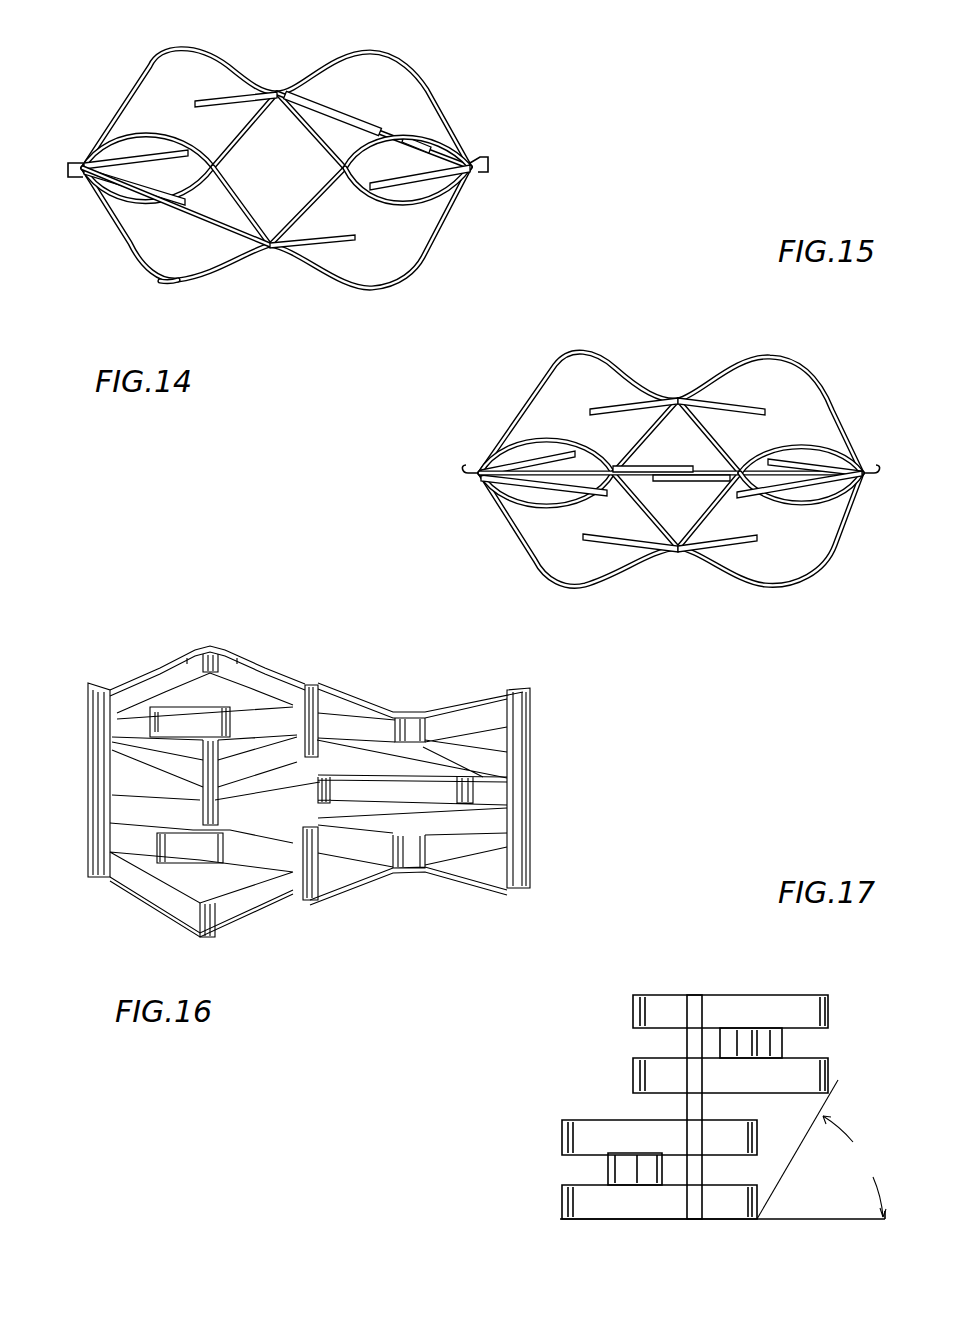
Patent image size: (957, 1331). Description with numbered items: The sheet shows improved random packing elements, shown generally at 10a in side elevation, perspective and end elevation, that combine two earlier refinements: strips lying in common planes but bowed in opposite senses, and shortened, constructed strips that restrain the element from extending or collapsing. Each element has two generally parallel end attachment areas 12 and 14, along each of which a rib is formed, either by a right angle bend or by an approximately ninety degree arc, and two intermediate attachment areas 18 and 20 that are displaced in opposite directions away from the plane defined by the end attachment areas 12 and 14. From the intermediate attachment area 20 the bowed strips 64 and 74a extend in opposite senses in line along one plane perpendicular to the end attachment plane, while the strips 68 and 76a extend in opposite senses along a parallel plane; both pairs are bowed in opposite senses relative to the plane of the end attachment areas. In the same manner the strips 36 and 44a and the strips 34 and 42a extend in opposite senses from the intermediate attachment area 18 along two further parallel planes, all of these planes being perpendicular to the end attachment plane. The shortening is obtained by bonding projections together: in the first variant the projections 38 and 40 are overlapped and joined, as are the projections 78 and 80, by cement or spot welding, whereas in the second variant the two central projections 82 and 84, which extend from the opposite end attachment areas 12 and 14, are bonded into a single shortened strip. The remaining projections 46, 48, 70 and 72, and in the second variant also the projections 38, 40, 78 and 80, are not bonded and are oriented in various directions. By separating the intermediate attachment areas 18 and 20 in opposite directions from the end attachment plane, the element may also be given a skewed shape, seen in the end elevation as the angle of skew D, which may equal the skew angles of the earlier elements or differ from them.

In FIG. 14, the packing element 10a is at (282, 56).
In FIG. 15, the packing element 10a is at (685, 314).
In FIG. 16, the packing element 10a is at (383, 644).
In FIG. 17, the packing element 10a is at (567, 1048).
In FIG. 14, the end attachment area 12 is at (70, 160).
In FIG. 15, the end attachment area 12 is at (465, 470).
In FIG. 16, the end attachment area 12 is at (90, 692).
In FIG. 14, the end attachment area 14 is at (490, 166).
In FIG. 15, the end attachment area 14 is at (880, 473).
In FIG. 16, the end attachment area 14 is at (527, 765).
In FIG. 17, the end attachment area 14 is at (697, 995).
In FIG. 14, the intermediate attachment area 18 is at (273, 250).
In FIG. 15, the intermediate attachment area 18 is at (676, 560).
In FIG. 16, the intermediate attachment area 18 is at (300, 690).
In FIG. 17, the intermediate attachment area 18 is at (788, 1040).
In FIG. 14, the intermediate attachment area 20 is at (285, 90).
In FIG. 15, the intermediate attachment area 20 is at (678, 395).
In FIG. 16, the intermediate attachment area 20 is at (307, 892).
In FIG. 17, the intermediate attachment area 20 is at (610, 1172).
In FIG. 14, the strip 34 is at (173, 285).
In FIG. 15, the strip 34 is at (555, 585).
In FIG. 16, the strip 34 is at (175, 650).
In FIG. 17, the strip 34 is at (832, 1010).
In FIG. 14, the strip 36 is at (130, 135).
In FIG. 15, the strip 36 is at (520, 445).
In FIG. 16, the strip 36 is at (115, 757).
In FIG. 17, the strip 36 is at (640, 1078).
In FIG. 14, the projection 38 is at (140, 188).
In FIG. 15, the projection 38 is at (530, 497).
In FIG. 14, the projection 40 is at (207, 230).
In FIG. 15, the projection 40 is at (600, 542).
In FIG. 14, the strip 42a is at (318, 212).
In FIG. 15, the strip 42a is at (775, 447).
In FIG. 16, the strip 42a is at (473, 715).
In FIG. 17, the strip 42a is at (640, 1007).
In FIG. 14, the strip 44a is at (424, 262).
In FIG. 15, the strip 44a is at (818, 567).
In FIG. 16, the strip 44a is at (497, 757).
In FIG. 17, the strip 44a is at (835, 1072).
In FIG. 14, the projection 46 is at (400, 190).
In FIG. 15, the projection 46 is at (790, 498).
In FIG. 17, the projection 46 is at (727, 1030).
In FIG. 14, the projection 48 is at (358, 242).
In FIG. 15, the projection 48 is at (755, 545).
In FIG. 17, the projection 48 is at (770, 1040).
In FIG. 14, the strip 64 is at (137, 73).
In FIG. 15, the strip 64 is at (537, 372).
In FIG. 16, the strip 64 is at (150, 905).
In FIG. 17, the strip 64 is at (575, 1205).
In FIG. 14, the strip 68 is at (134, 250).
In FIG. 15, the strip 68 is at (545, 520).
In FIG. 16, the strip 68 is at (130, 817).
In FIG. 17, the strip 68 is at (760, 1135).
In FIG. 14, the projection 70 is at (167, 150).
In FIG. 15, the projection 70 is at (555, 454).
In FIG. 14, the projection 72 is at (213, 99).
In FIG. 15, the projection 72 is at (600, 408).
In FIG. 14, the strip 74a is at (433, 203).
In FIG. 15, the strip 74a is at (830, 510).
In FIG. 16, the strip 74a is at (345, 880).
In FIG. 17, the strip 74a is at (735, 1205).
In FIG. 14, the strip 76a is at (425, 76).
In FIG. 15, the strip 76a is at (812, 387).
In FIG. 16, the strip 76a is at (467, 842).
In FIG. 17, the strip 76a is at (565, 1130).
In FIG. 14, the projection 78 is at (426, 140).
In FIG. 15, the projection 78 is at (808, 468).
In FIG. 17, the projection 78 is at (672, 1175).
In FIG. 14, the projection 80 is at (352, 112).
In FIG. 15, the projection 80 is at (748, 408).
In FIG. 17, the projection 80 is at (612, 1162).
In FIG. 15, the central projection 82 is at (672, 465).
In FIG. 16, the central projection 82 is at (120, 783).
In FIG. 15, the central projection 84 is at (690, 483).
In FIG. 16, the central projection 84 is at (490, 793).
In FIG. 17, the angle of skew D is at (821, 1149).